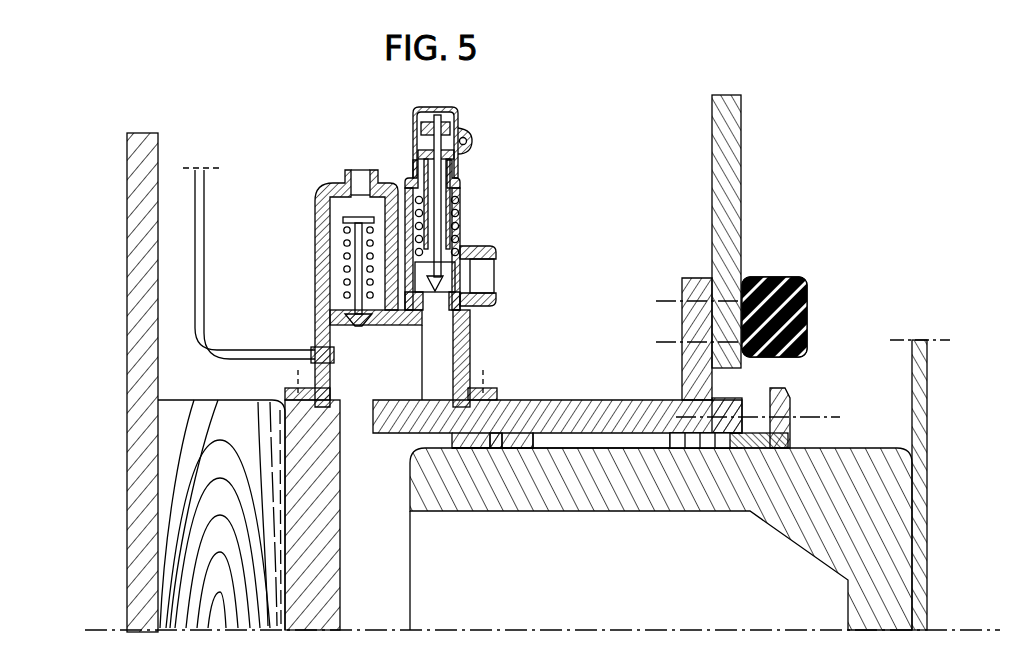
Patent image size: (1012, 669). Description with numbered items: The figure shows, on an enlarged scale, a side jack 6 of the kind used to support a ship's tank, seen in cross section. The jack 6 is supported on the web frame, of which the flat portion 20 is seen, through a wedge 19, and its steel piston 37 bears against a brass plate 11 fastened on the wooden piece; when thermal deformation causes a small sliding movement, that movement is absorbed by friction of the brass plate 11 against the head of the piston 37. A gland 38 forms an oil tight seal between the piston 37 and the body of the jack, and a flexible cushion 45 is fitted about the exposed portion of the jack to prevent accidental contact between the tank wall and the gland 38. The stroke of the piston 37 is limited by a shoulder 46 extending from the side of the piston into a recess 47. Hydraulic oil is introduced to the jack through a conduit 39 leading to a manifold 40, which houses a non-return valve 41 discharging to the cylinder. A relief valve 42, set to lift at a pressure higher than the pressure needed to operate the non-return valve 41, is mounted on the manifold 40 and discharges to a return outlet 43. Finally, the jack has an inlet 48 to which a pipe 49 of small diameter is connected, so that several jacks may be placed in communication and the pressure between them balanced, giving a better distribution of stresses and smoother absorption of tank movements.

The side jack 6 is at (315, 277).
The brass plate 11 is at (915, 493).
The wedge 19 is at (223, 462).
The flat portion 20 is at (143, 373).
The piston 37 is at (823, 487).
The gland 38 is at (782, 408).
The conduit 39 is at (363, 178).
The manifold 40 is at (330, 317).
The non-return valve 41 is at (356, 268).
The relief valve 42 is at (439, 220).
The return outlet 43 is at (474, 278).
The flexible cushion 45 is at (797, 277).
The shoulder 46 is at (492, 445).
The recess 47 is at (516, 442).
The inlet 48 is at (322, 355).
The pipe 49 is at (198, 202).